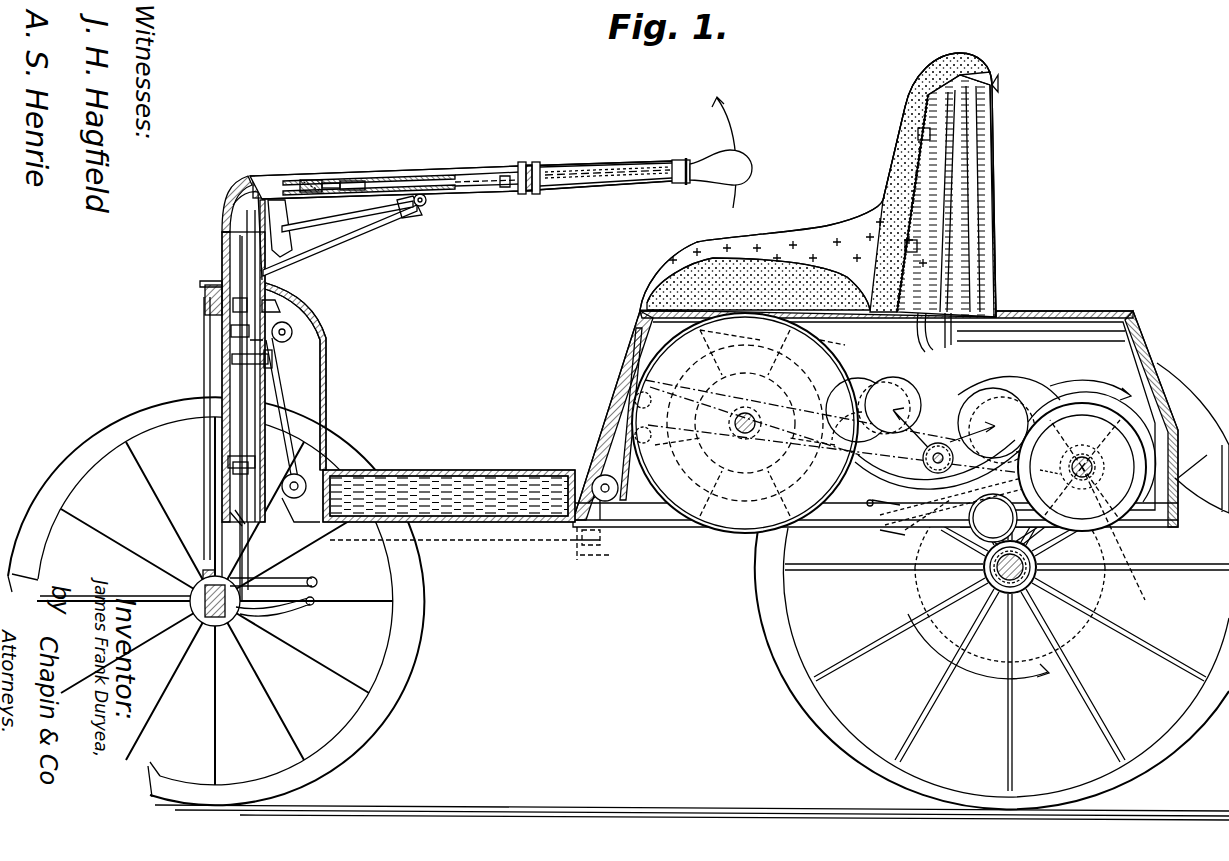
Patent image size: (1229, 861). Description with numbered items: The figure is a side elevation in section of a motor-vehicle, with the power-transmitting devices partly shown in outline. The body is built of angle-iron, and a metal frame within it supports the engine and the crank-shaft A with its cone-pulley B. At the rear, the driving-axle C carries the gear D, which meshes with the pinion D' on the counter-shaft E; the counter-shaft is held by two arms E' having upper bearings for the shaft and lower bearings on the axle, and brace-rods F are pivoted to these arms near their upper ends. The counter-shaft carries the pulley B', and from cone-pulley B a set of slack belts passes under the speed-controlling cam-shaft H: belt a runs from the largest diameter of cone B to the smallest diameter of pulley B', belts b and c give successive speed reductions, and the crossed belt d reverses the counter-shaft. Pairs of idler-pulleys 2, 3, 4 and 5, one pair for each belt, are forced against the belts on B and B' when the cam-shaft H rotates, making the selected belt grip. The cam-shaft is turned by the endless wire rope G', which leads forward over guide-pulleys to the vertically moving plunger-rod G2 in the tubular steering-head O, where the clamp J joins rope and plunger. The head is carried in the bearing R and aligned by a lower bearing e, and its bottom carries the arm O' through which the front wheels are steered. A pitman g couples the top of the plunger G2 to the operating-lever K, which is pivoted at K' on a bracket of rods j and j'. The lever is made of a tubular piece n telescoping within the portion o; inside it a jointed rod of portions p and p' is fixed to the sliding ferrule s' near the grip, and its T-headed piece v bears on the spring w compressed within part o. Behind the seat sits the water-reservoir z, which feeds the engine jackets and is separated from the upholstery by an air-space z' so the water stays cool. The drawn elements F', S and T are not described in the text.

The crank-shaft A is at (745, 434).
The cone-pulley B is at (851, 439).
The counter-shaft pulley B' is at (901, 419).
The driving-axle C is at (1037, 574).
The gear D is at (1010, 603).
The pinion D' is at (1087, 469).
The counter-shaft E is at (1090, 467).
The arms E' is at (1121, 539).
The brace-rods F is at (1050, 448).
The lever F' is at (921, 531).
The endless wire rope G' is at (569, 422).
The plunger-rod G2 is at (240, 380).
The speed-controlling cam-shaft H is at (942, 445).
The clamp J is at (232, 360).
The operating-lever K is at (493, 152).
The pivot K' is at (432, 211).
The steering-head O is at (223, 388).
The arm O' is at (258, 584).
The bearing R is at (206, 298).
The bracket S is at (279, 218).
The link T is at (303, 272).
The belt a is at (843, 545).
The belt b is at (810, 548).
The belt c is at (880, 488).
The crossed belt d is at (945, 530).
The bearing e is at (228, 462).
The pitman g is at (228, 222).
The rod j is at (347, 227).
The rod j' is at (398, 225).
The tubular piece n is at (606, 182).
The tubular portion o is at (502, 187).
The rod p is at (295, 238).
The bifurcated rod p' is at (294, 294).
The ferrule s' is at (712, 180).
The T-headed piece v is at (310, 180).
The spring w is at (322, 182).
The water-reservoir z is at (831, 202).
The air-space z' is at (892, 182).
The idler-pulleys 2 is at (946, 420).
The idler-pulleys 3 is at (905, 407).
The idler-pulleys 4 is at (818, 332).
The idler-pulleys 5 is at (845, 332).